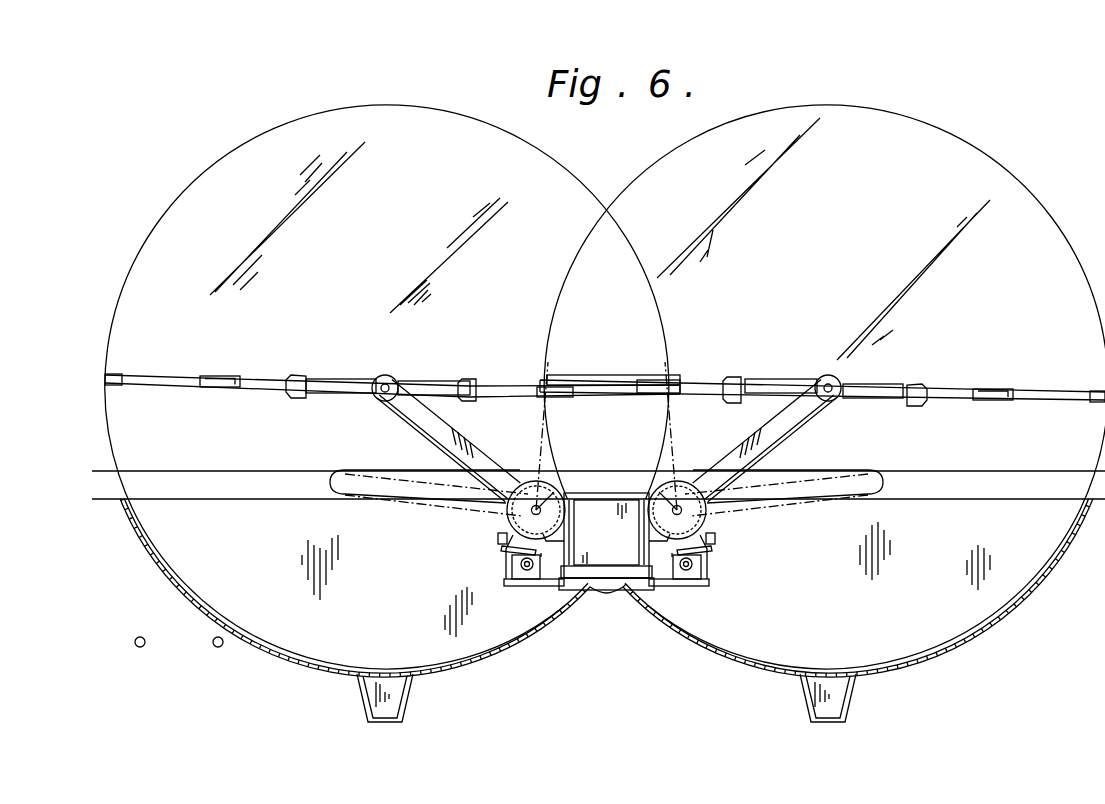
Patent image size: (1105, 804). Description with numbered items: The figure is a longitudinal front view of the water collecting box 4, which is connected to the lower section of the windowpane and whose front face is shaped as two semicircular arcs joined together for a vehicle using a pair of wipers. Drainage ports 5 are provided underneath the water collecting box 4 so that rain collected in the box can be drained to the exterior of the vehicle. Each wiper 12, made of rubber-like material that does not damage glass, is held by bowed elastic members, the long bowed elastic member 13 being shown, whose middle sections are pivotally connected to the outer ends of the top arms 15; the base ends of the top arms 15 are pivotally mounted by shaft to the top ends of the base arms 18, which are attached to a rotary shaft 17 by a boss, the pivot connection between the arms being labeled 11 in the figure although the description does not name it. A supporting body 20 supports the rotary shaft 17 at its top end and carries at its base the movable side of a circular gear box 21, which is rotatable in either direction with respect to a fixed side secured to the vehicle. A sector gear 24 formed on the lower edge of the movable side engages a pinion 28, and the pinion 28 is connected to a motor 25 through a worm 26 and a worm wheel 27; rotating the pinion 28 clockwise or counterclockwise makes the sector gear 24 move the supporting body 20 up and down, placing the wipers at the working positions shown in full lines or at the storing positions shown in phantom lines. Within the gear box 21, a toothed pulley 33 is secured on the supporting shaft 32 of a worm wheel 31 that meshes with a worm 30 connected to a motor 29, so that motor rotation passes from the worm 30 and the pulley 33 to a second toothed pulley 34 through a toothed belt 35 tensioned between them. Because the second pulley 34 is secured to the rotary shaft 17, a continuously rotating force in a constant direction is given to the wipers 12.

The water collecting box 4 is at (470, 658).
The drainage port 5 is at (405, 706).
The wiper blade pivot 11 is at (378, 377).
The wiper 12 is at (120, 376).
The long bowed elastic member 13 is at (181, 378).
The top arm 15 is at (262, 378).
The rotary shaft 17 is at (388, 383).
The base arm 18 is at (333, 380).
The supporting body 20 is at (405, 476).
The circular gear box 21 is at (514, 484).
The sector gear 24 is at (505, 548).
The motor 25 is at (612, 590).
The worm 26 is at (526, 583).
The worm wheel 27 is at (506, 582).
The pinion 28 is at (516, 566).
The motor 29 is at (597, 578).
The worm 30 is at (508, 525).
The worm wheel 31 is at (533, 481).
The supporting shaft 32 is at (560, 505).
The toothed pulley 33 is at (547, 492).
The second toothed pulley 34 is at (425, 381).
The toothed belt 35 is at (395, 410).